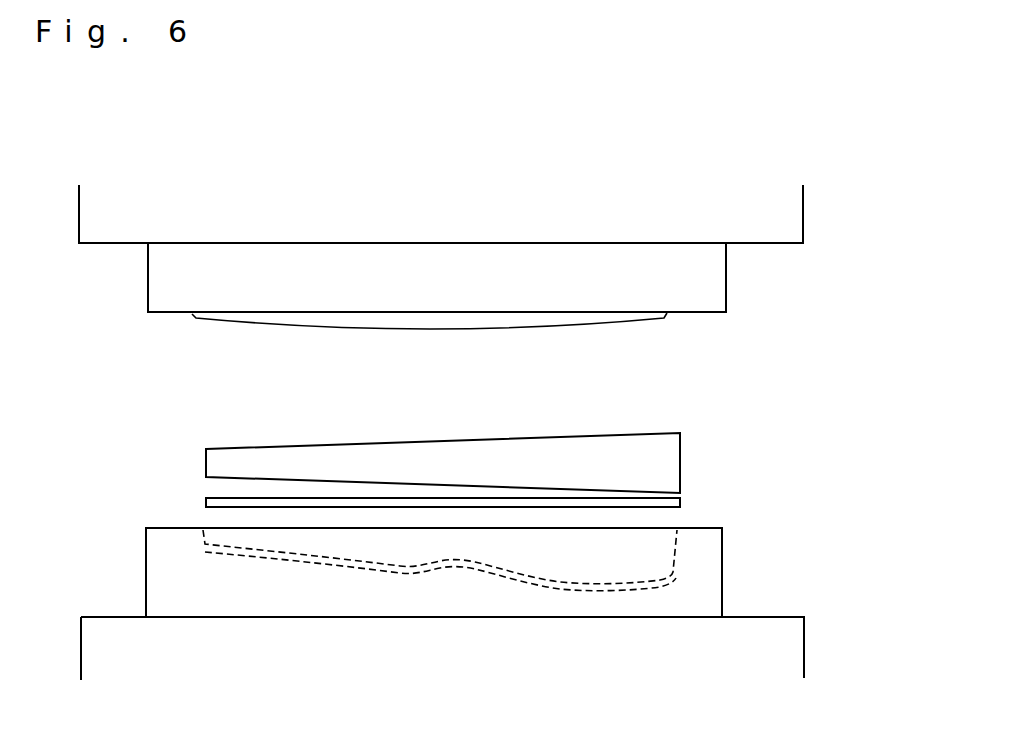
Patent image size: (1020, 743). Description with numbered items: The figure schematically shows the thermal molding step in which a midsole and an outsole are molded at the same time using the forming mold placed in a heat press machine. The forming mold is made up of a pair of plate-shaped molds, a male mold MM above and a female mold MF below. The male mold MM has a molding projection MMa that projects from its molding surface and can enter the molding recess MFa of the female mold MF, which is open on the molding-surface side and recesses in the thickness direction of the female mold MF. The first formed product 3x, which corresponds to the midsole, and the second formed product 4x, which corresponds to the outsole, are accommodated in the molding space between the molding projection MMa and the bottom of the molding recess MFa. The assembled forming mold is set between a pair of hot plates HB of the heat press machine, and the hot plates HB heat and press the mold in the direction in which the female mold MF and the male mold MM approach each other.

The hot plate HB is at (780, 215).
The male mold MM is at (713, 278).
The molding projection MMa is at (667, 318).
The first formed product 3x is at (682, 463).
The second formed product 4x is at (682, 505).
The female mold MF is at (718, 596).
The molding recess MFa is at (457, 565).